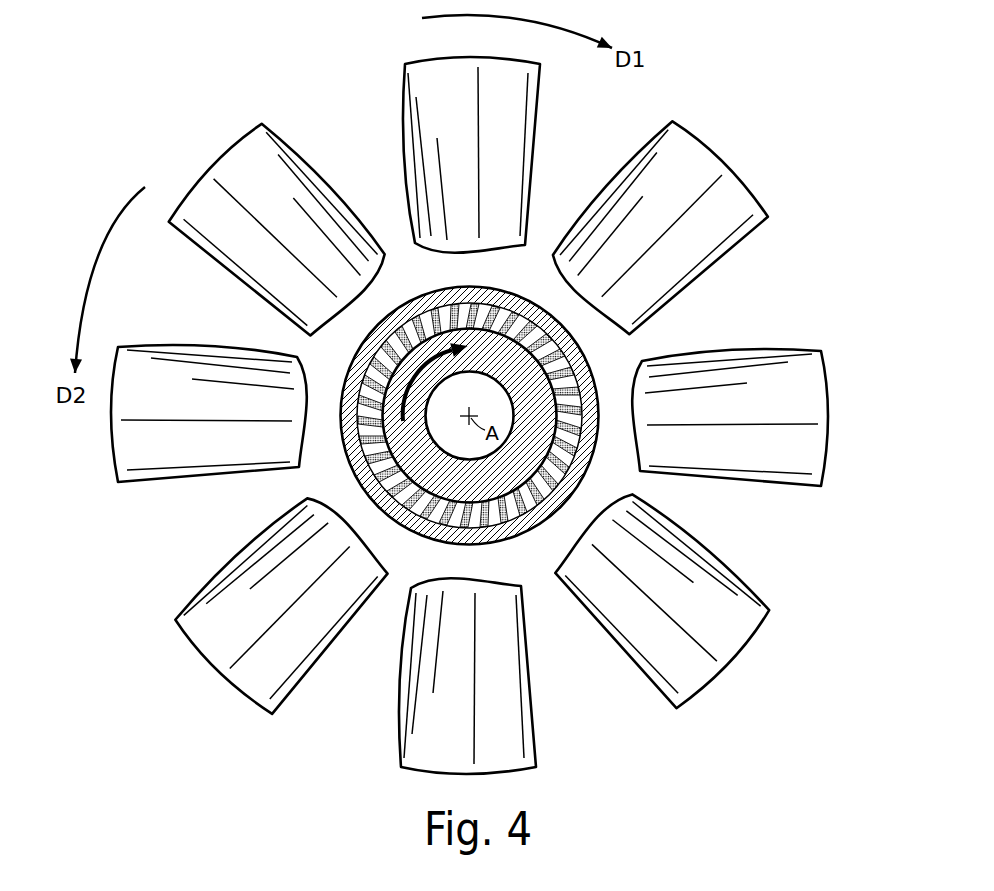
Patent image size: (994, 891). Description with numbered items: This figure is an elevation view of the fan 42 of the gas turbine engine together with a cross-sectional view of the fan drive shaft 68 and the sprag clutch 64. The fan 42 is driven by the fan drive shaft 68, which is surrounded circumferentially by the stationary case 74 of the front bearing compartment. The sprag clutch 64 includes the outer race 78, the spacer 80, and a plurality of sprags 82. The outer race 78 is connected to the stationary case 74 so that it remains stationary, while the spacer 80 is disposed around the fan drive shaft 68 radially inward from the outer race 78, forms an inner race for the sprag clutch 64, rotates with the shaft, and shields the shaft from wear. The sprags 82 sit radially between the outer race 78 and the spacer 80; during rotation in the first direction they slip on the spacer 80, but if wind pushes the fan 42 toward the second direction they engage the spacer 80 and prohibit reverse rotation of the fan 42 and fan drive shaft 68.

The fan 42 is at (276, 198).
The sprag clutch 64 is at (523, 310).
The fan drive shaft 68 is at (438, 372).
The stationary case 74 is at (518, 535).
The outer race 78 is at (593, 368).
The spacer 80 is at (588, 458).
The sprags 82 is at (425, 307).